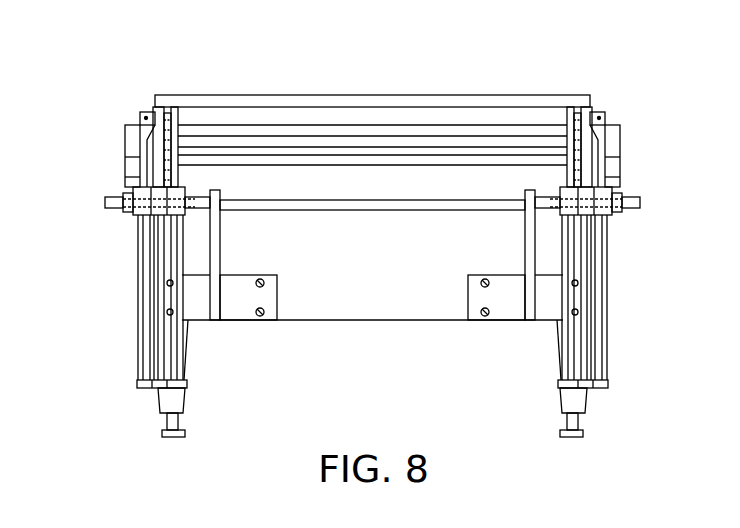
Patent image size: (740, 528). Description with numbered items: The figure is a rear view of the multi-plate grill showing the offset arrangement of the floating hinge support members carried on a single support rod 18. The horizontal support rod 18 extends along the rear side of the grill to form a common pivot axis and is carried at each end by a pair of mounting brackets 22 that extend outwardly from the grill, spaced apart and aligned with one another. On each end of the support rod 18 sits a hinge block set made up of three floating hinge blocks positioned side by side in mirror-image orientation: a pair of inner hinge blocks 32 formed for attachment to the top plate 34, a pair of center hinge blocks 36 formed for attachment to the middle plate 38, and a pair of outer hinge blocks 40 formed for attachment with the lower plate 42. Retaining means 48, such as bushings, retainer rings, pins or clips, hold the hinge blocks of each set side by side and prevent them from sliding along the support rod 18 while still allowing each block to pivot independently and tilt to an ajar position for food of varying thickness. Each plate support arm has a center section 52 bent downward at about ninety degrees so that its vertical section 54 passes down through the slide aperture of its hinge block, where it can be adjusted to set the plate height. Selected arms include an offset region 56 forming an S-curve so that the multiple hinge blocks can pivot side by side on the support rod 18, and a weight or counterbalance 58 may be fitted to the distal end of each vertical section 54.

The support rod 18 is at (394, 210).
The mounting brackets 22 is at (222, 256).
The inner hinge blocks 32 is at (185, 218).
The top plate 34 is at (510, 100).
The center hinge blocks 36 is at (157, 216).
The middle plate 38 is at (345, 130).
The outer hinge blocks 40 is at (137, 216).
The lower plate 42 is at (410, 150).
The retaining means 48 is at (557, 217).
The center section 52 is at (125, 138).
The vertical section 54 is at (138, 340).
The offset region 56 is at (163, 110).
The weight or counterbalance 58 is at (140, 385).